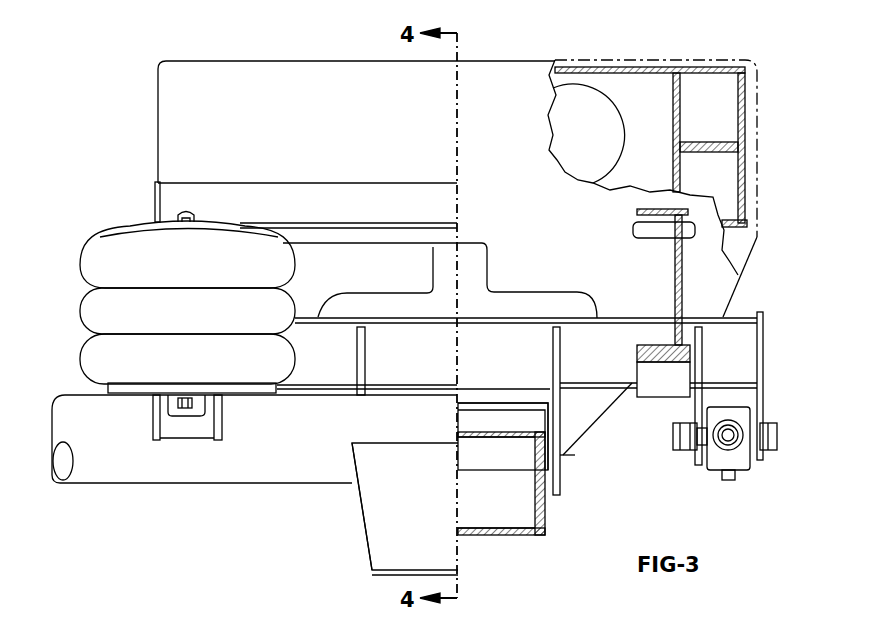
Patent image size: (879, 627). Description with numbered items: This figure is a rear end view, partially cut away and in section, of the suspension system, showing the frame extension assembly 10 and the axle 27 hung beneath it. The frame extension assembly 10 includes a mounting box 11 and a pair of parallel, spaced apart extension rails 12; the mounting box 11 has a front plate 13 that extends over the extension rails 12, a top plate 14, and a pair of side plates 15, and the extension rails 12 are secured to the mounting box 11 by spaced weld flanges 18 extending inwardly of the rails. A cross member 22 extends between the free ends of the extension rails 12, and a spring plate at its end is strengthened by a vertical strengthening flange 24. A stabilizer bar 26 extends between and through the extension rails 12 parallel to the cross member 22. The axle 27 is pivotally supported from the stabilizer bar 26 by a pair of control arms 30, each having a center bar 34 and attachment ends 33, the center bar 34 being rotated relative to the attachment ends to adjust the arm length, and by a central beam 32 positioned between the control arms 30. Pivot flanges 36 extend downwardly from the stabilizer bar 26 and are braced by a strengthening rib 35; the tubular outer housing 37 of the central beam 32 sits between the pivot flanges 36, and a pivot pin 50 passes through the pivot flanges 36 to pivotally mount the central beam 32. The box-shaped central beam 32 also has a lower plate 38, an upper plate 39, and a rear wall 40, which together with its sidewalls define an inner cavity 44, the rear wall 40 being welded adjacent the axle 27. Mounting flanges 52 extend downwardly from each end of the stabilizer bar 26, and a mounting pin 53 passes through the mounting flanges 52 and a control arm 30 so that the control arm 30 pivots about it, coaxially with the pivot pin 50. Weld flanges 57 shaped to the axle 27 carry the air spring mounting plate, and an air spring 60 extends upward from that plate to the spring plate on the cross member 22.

The frame extension assembly 10 is at (765, 284).
The mounting box 11 is at (732, 58).
The extension rails 12 is at (673, 270).
The front plate 13 is at (175, 117).
The top plate 14 is at (627, 68).
The side plates 15 is at (747, 128).
The weld flanges 18 is at (672, 97).
The cross member 22 is at (308, 195).
The vertical strengthening flange 24 is at (155, 200).
The stabilizer bar 26 is at (520, 335).
The axle 27 is at (245, 468).
The control arms 30 is at (748, 414).
The central beam 32 is at (360, 517).
The attachment ends 33 is at (740, 472).
The center bar 34 is at (742, 445).
The strengthening rib 35 is at (592, 410).
The pivot flanges 36 is at (365, 345).
The tubular outer housing 37 is at (485, 467).
The lower plate 38 is at (505, 538).
The upper plate 39 is at (478, 440).
The rear wall 40 is at (382, 543).
The inner cavity 44 is at (513, 490).
The pivot pin 50 is at (565, 453).
The mounting flanges 52 is at (705, 345).
The mounting pin 53 is at (775, 437).
The weld flanges 57 is at (155, 418).
The air spring 60 is at (105, 250).